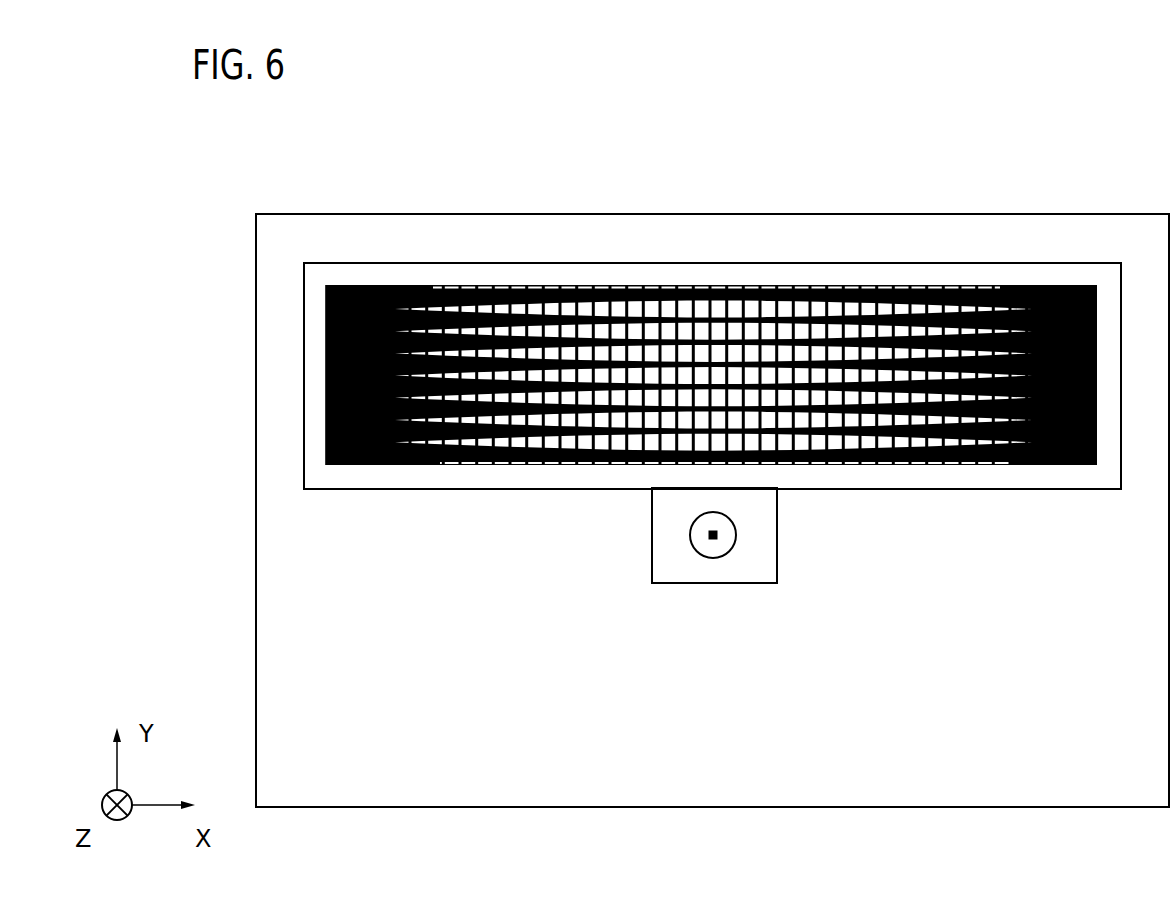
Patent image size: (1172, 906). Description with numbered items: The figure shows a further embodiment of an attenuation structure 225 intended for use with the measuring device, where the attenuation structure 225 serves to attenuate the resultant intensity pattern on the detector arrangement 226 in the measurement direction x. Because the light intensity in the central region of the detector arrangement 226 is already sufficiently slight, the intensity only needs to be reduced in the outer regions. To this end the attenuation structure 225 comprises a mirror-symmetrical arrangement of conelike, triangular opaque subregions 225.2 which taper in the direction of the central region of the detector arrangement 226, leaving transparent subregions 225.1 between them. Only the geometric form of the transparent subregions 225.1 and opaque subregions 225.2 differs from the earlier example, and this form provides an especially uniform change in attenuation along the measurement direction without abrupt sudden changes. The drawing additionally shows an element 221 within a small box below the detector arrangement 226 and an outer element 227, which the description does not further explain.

The attenuation structure 225 is at (712, 302).
The transparent subregions 225.1 is at (595, 285).
The opaque subregions 225.2 is at (506, 285).
The detector arrangement 226 is at (767, 288).
The sensor marker 221 is at (728, 537).
The carrier plate 227 is at (378, 786).